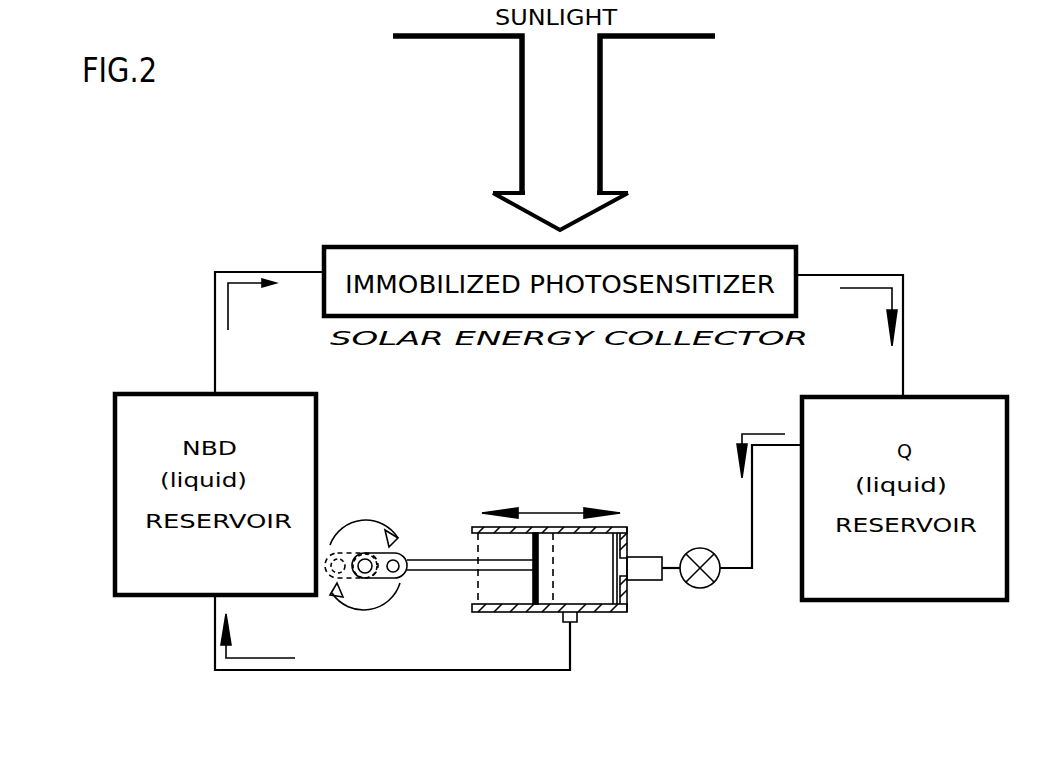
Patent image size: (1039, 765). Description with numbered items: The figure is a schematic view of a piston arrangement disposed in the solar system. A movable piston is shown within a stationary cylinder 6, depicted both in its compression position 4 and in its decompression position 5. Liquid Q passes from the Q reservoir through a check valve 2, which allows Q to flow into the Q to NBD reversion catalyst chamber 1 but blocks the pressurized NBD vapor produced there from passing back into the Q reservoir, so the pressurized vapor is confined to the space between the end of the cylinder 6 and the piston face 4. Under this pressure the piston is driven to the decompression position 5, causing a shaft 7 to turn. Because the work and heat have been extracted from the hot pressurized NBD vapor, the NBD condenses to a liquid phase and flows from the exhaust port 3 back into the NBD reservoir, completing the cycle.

The reversion catalyst chamber 1 is at (681, 620).
The check valve 2 is at (758, 616).
The exhaust port 3 is at (620, 669).
The piston face in compression position 4 is at (661, 537).
The piston in decompression position 5 is at (539, 514).
The stationary cylinder 6 is at (549, 590).
The shaft 7 is at (366, 586).